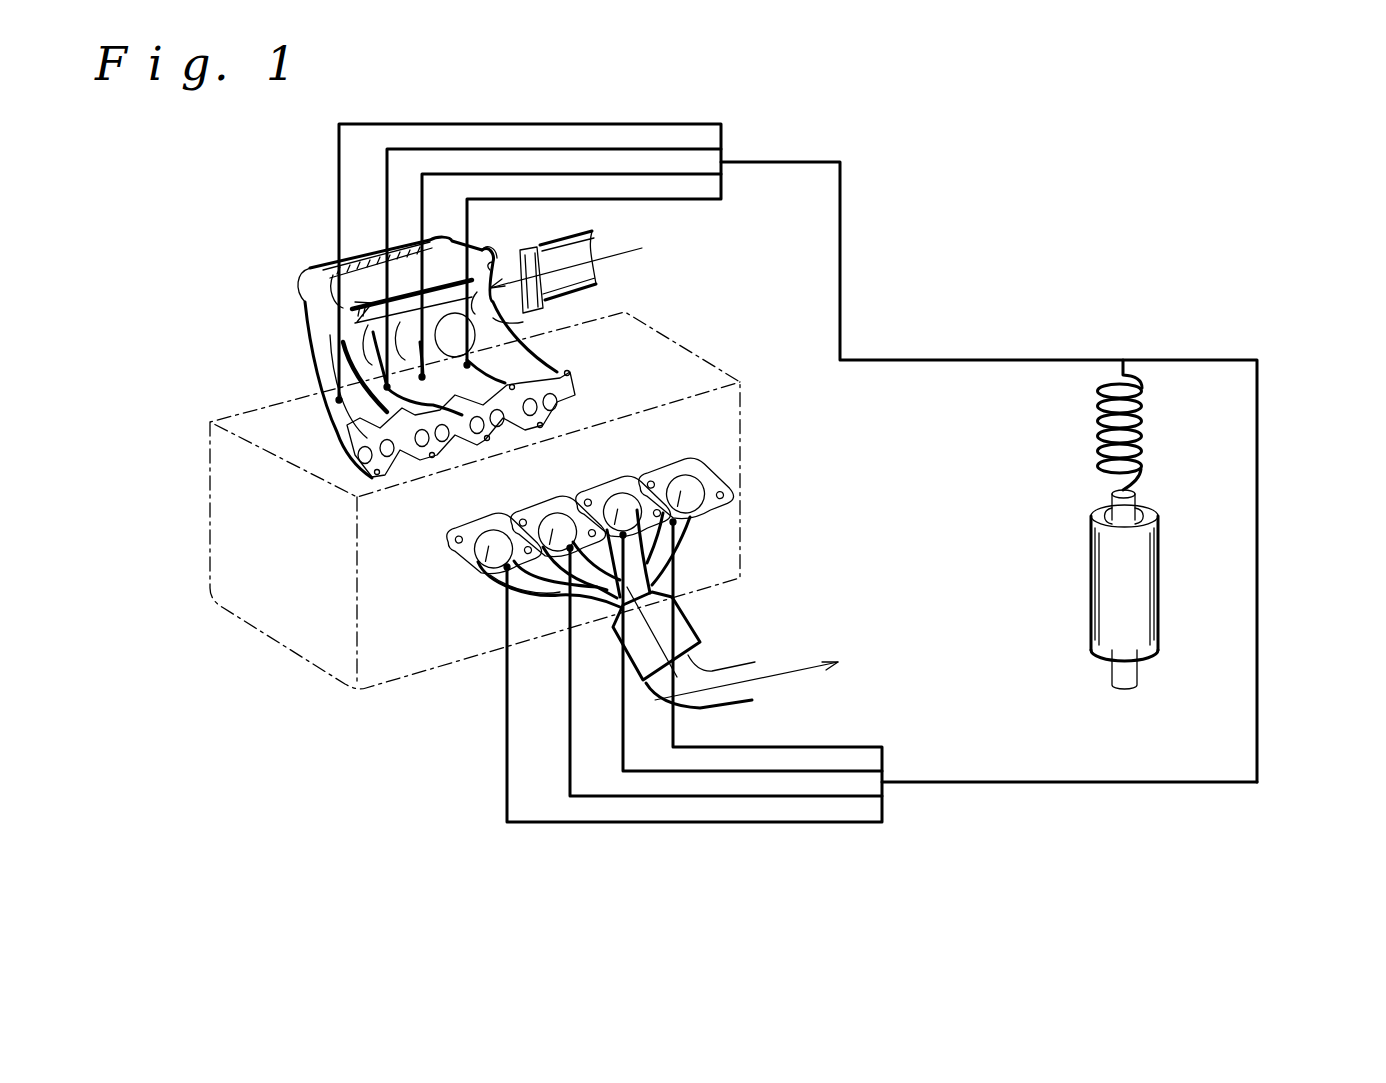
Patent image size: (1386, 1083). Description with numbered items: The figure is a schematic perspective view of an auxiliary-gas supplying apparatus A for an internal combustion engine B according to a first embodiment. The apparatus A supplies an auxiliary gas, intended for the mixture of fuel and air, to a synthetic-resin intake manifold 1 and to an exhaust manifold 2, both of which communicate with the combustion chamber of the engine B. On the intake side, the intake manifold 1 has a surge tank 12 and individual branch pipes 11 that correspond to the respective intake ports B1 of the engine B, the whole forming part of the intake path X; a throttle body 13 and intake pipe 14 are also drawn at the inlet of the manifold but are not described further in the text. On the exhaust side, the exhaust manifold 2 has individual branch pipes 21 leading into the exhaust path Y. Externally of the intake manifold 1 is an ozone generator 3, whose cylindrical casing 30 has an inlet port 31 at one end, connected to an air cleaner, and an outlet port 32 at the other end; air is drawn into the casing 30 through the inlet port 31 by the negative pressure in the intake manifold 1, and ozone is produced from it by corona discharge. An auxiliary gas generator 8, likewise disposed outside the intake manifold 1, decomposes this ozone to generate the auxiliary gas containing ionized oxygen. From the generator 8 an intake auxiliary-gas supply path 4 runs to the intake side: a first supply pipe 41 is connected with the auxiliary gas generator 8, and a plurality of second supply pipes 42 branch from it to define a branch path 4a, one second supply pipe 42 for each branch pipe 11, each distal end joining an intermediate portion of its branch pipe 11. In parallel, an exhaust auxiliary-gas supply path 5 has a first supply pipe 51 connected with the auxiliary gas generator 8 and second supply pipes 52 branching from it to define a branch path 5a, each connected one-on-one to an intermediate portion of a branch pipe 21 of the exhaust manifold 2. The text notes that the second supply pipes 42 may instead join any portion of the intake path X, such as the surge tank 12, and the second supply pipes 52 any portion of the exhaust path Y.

The intake manifold 1 is at (431, 348).
The branch pipes 11 is at (540, 350).
The surge tank 12 is at (365, 253).
The throttle body 13 is at (505, 267).
The intake pipe 14 is at (563, 253).
The exhaust manifold 2 is at (696, 618).
The branch pipes 21 is at (692, 467).
The ozone generator 3 is at (1117, 553).
The cylindrical casing 30 is at (1137, 570).
The inlet port 31 is at (1123, 673).
The outlet port 32 is at (1118, 488).
The intake auxiliary-gas supply path 4 is at (729, 225).
The branch path 4a is at (565, 122).
The first supply pipe 41 is at (842, 250).
The second supply pipes 42 is at (462, 123).
The exhaust auxiliary-gas supply path 5 is at (880, 723).
The branch path 5a is at (698, 825).
The first supply pipe 51 is at (1259, 710).
The second supply pipes 52 is at (827, 747).
The auxiliary gas generator 8 is at (1143, 423).
The auxiliary-gas supplying apparatus A is at (1172, 340).
The internal combustion engine B is at (318, 647).
The intake ports B1 is at (573, 417).
The intake path X is at (622, 255).
The exhaust path Y is at (808, 663).